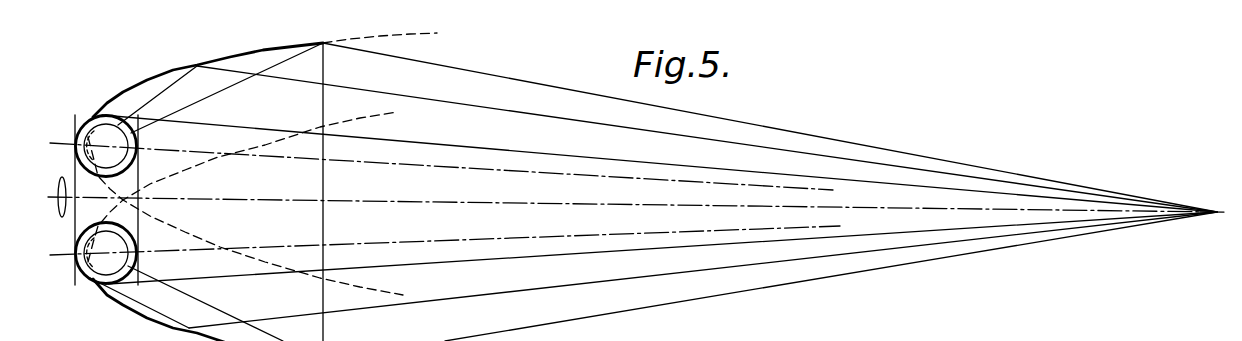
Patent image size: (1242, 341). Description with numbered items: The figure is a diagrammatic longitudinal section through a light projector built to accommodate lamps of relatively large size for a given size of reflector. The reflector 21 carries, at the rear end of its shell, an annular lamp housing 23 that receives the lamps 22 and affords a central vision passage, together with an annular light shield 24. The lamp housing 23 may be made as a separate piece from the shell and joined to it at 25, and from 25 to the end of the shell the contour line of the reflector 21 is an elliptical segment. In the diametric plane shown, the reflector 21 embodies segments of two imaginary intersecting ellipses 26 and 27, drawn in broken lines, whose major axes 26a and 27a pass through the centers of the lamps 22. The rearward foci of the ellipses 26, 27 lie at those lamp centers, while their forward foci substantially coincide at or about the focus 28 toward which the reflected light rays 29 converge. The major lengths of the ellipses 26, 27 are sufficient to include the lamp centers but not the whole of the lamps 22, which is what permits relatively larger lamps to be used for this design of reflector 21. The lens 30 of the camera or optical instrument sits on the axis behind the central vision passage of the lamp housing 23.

The reflector 21 is at (214, 62).
The lamps 22 is at (92, 278).
The annular lamp housing 23 is at (87, 126).
The annular light shield 24 is at (139, 136).
The joint of lamp housing and shell 25 is at (100, 114).
The imaginary ellipse 26 is at (441, 35).
The imaginary ellipse 27 is at (377, 117).
The major axis of ellipse 26 26a is at (470, 167).
The major axis of ellipse 27 27a is at (447, 242).
The focus of reflected light rays 28 is at (1217, 213).
The reflected light rays 29 is at (763, 173).
The lens 30 is at (63, 216).